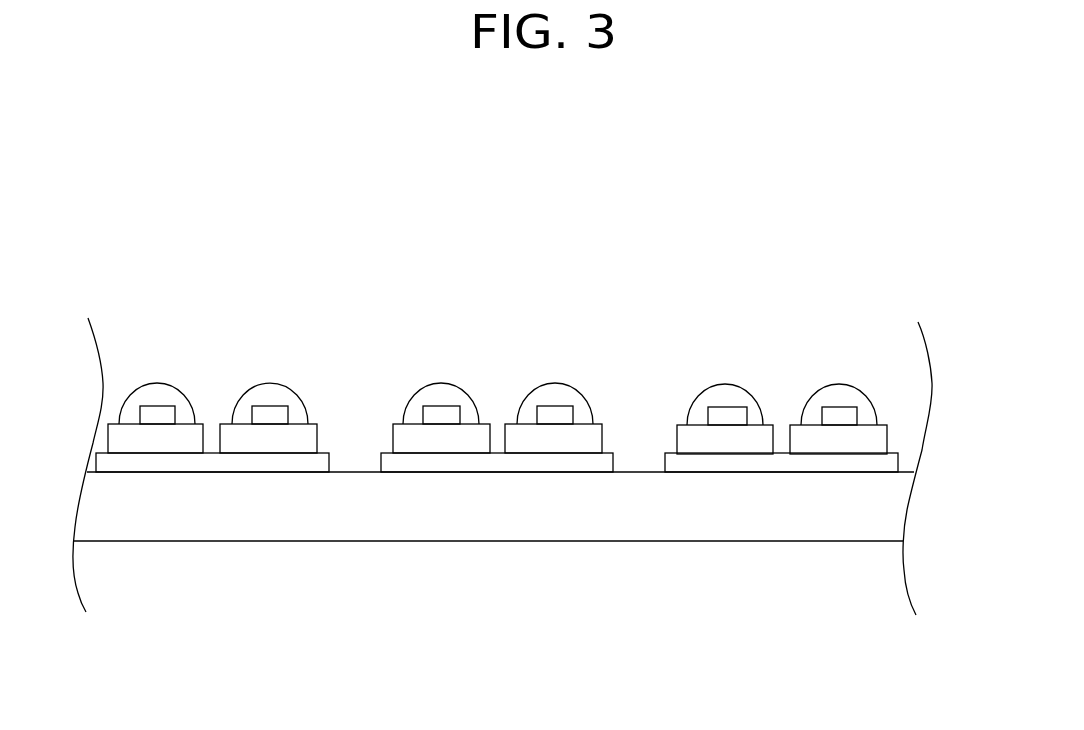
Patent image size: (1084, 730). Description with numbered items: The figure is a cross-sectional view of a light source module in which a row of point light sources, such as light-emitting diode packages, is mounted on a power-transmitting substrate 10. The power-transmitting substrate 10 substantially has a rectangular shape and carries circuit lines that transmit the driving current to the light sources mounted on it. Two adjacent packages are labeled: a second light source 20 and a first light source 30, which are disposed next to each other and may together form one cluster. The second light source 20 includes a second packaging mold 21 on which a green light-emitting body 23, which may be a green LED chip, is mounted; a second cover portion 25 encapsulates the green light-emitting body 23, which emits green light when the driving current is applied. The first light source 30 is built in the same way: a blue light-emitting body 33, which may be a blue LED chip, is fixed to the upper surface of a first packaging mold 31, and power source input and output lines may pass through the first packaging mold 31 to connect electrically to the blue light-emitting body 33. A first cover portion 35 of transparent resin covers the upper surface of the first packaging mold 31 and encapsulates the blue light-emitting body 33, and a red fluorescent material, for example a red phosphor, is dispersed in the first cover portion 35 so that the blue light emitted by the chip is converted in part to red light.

The power-transmitting substrate 10 is at (736, 520).
The second light source 20 is at (428, 346).
The second packaging mold 21 is at (400, 438).
The green light-emitting body 23 is at (437, 415).
The second cover portion 25 is at (441, 357).
The first light source 30 is at (545, 346).
The first packaging mold 31 is at (523, 438).
The blue light-emitting body 33 is at (547, 415).
The first cover portion 35 is at (558, 357).